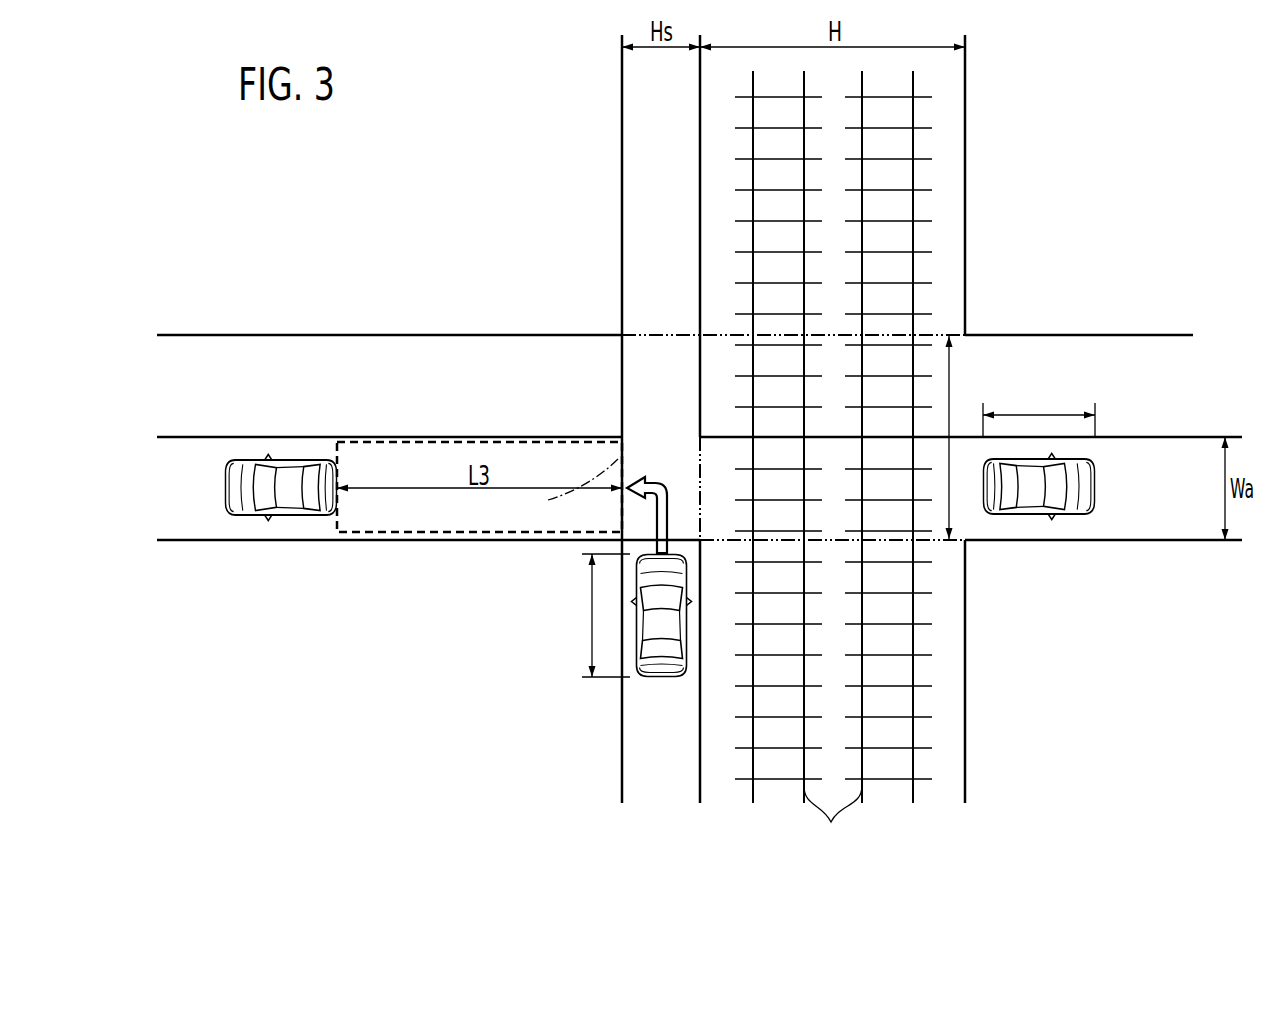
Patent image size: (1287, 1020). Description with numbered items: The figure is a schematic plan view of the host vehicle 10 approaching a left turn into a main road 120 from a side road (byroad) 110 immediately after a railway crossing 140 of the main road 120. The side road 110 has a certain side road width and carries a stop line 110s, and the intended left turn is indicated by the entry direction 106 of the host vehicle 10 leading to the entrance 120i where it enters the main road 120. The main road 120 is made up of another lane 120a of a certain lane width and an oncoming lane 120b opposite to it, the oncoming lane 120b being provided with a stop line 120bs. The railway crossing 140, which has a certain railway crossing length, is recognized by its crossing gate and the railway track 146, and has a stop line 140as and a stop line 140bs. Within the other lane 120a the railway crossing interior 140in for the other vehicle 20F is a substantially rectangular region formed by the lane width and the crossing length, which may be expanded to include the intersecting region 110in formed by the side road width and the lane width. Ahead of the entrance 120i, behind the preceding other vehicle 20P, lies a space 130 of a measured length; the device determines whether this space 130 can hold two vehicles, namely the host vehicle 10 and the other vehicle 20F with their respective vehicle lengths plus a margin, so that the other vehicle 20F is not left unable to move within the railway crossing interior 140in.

The host vehicle 10 is at (663, 668).
The other vehicle (preceding vehicle) 20P is at (225, 478).
The other vehicle 20F is at (1085, 485).
The entry direction 106 is at (668, 512).
The side road (byroad) 110 is at (655, 752).
The stop line 110s is at (700, 530).
The intersecting region 110in is at (639, 515).
The main road 120 is at (443, 352).
The other lane 120a is at (1172, 510).
The oncoming lane 120b is at (1105, 368).
The stop line 120bs is at (622, 372).
The entrance 120i is at (563, 491).
The space (empty space) 130 is at (398, 438).
The railway crossing 140 is at (1014, 593).
The stop line 140as is at (965, 520).
The stop line 140bs is at (700, 417).
The railway crossing interior 140in is at (835, 513).
The railway track 146 is at (833, 462).